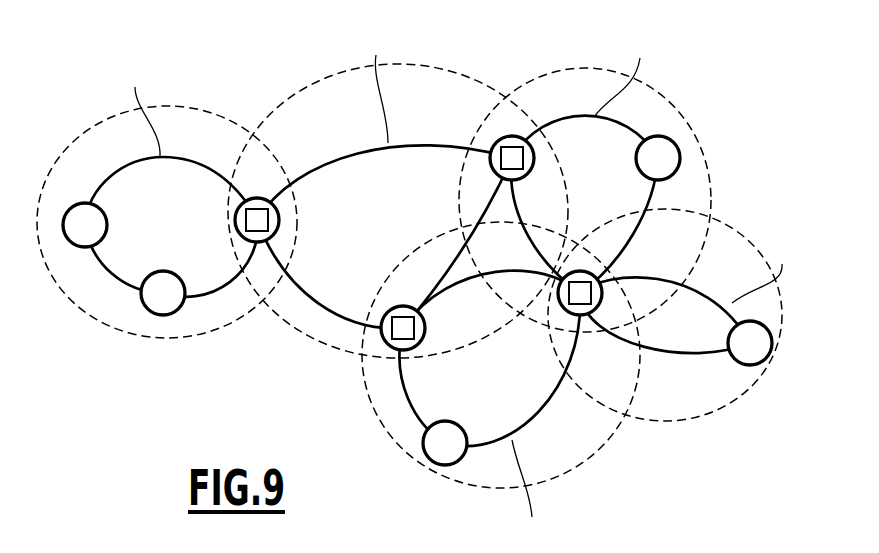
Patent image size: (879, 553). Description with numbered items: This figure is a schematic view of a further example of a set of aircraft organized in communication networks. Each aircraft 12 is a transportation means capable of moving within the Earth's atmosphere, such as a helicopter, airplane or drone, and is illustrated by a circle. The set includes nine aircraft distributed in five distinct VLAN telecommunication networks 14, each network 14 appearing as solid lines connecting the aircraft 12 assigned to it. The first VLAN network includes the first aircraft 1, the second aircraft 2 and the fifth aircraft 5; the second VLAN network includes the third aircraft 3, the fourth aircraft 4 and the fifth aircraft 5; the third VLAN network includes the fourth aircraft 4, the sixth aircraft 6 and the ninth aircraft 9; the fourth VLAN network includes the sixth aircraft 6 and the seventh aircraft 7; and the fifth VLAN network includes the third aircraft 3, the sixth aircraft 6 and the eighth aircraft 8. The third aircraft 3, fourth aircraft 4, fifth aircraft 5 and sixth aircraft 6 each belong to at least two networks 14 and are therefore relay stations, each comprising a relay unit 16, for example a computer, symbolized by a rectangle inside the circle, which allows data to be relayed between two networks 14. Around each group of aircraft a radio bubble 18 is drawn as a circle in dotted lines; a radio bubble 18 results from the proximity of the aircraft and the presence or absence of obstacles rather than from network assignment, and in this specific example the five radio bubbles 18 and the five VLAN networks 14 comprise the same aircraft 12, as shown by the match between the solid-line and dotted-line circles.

The first aircraft 1 is at (78, 205).
The second aircraft 2 is at (180, 314).
The third aircraft 3 is at (424, 316).
The fourth aircraft 4 is at (534, 154).
The fifth aircraft 5 is at (280, 208).
The sixth aircraft 6 is at (601, 280).
The seventh aircraft 7 is at (772, 344).
The eighth aircraft 8 is at (452, 465).
The ninth aircraft 9 is at (679, 149).
The aircraft 12 is at (420, 291).
The telecommunications network 14 is at (212, 296).
The relay unit 16 is at (258, 228).
The radio bubble 18 is at (82, 135).